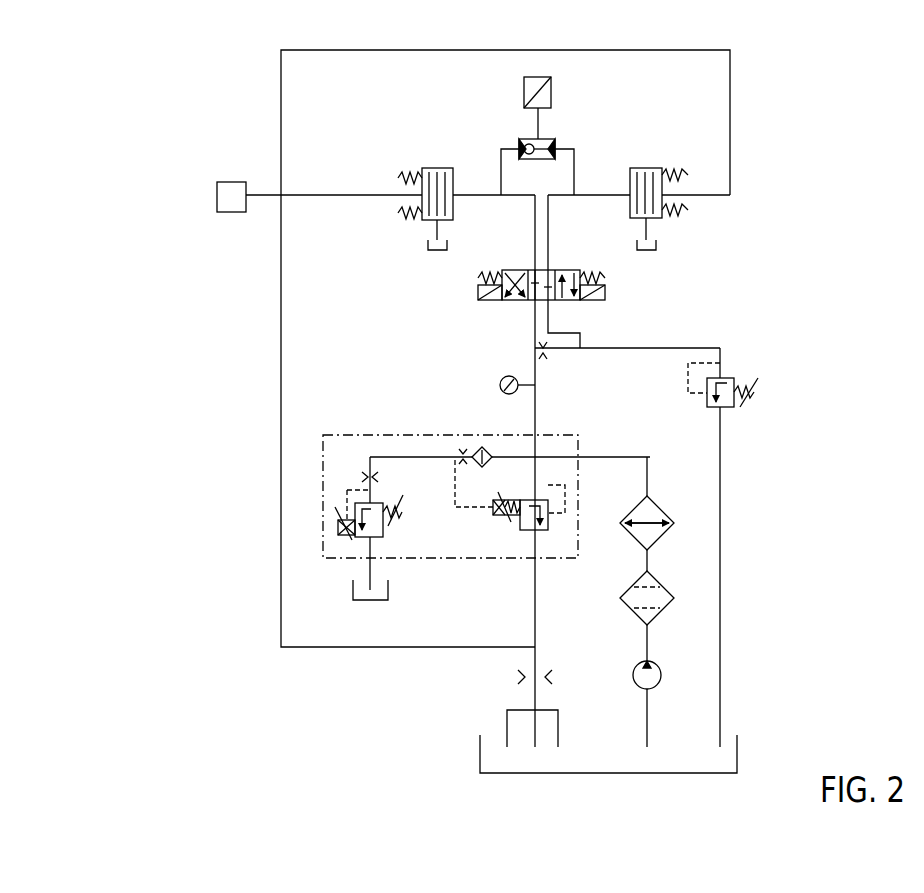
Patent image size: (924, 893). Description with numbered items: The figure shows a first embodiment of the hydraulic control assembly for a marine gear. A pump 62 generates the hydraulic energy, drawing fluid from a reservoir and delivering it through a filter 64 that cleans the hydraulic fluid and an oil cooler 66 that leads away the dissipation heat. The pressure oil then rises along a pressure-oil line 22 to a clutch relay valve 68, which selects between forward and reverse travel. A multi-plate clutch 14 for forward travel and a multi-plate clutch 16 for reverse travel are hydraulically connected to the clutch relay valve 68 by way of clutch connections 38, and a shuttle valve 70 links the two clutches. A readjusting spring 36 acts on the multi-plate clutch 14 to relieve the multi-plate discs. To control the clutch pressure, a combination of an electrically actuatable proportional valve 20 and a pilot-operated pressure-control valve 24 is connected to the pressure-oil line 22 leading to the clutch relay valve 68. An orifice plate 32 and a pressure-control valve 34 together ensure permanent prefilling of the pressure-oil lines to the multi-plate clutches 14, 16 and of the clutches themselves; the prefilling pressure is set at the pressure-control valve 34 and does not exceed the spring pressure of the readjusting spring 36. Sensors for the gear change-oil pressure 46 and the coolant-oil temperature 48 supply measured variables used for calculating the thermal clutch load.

The multi-plate clutch 14 is at (641, 165).
The multi-plate clutch 16 is at (436, 165).
The proportional valve 20 is at (397, 530).
The pressure-oil line 22 is at (538, 418).
The pilot-operated pressure-control valve 24 is at (512, 535).
The orifice plate 32 is at (550, 364).
The pressure-control valve 34 is at (732, 363).
The readjusting spring 36 is at (690, 212).
The clutch connections 38 is at (577, 190).
The gear change-oil pressure sensor 46 is at (553, 98).
The coolant-oil temperature sensor 48 is at (217, 196).
The pump 62 is at (650, 676).
The filter 64 is at (660, 598).
The oil cooler 66 is at (658, 538).
The clutch relay valve 68 is at (567, 262).
The shuttle valve 70 is at (515, 137).